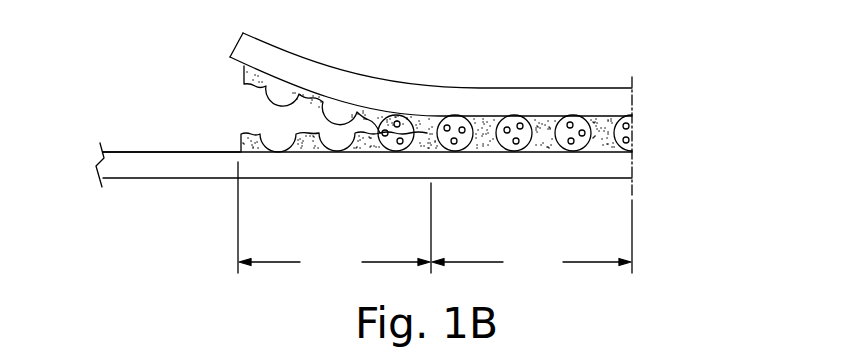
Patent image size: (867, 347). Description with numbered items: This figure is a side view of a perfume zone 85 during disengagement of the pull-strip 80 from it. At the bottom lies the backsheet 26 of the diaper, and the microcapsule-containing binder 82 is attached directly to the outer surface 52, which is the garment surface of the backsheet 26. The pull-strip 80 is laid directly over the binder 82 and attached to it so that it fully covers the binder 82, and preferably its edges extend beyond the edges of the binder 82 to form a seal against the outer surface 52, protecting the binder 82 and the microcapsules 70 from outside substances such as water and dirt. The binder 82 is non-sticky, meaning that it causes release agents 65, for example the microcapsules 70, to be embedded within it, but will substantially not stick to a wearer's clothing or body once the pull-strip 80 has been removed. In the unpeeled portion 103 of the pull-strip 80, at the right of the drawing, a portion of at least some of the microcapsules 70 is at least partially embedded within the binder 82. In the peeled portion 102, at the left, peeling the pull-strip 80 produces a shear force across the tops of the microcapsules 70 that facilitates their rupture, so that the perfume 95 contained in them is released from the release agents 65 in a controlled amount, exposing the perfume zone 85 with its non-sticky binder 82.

The backsheet 26 is at (203, 172).
The outer surface 52 is at (121, 142).
The release agents 65 is at (438, 117).
The microcapsules 70 is at (455, 117).
The pull-strip 80 is at (273, 57).
The binder 82 is at (242, 72).
The perfume zone 85 is at (616, 59).
The perfume 95 is at (570, 122).
The peeled portion 102 is at (334, 220).
The unpeeled portion 103 is at (532, 239).